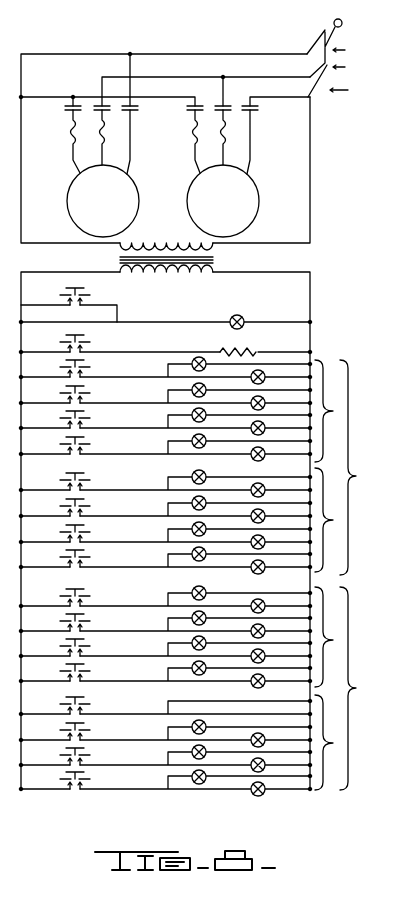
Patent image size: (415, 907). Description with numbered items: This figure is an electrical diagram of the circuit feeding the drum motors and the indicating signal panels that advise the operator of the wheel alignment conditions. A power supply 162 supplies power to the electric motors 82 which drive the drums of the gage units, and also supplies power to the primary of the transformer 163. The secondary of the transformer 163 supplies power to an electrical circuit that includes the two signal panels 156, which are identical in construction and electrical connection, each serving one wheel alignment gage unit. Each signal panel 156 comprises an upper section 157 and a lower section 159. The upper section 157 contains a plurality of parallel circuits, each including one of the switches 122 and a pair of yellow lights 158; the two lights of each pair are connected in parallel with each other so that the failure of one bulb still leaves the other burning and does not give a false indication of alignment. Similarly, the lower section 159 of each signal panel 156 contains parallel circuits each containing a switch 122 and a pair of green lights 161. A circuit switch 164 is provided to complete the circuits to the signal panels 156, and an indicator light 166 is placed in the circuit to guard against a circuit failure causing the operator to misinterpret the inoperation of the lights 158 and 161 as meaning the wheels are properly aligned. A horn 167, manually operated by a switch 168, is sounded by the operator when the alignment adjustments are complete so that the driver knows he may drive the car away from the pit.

The electric motors 82 is at (121, 194).
The power supply 162 is at (306, 56).
The transformer 163 is at (182, 274).
The circuit switch 164 is at (83, 298).
The indicator light 166 is at (244, 314).
The horn 167 is at (253, 349).
The switch 168 is at (85, 339).
The switches 122 is at (86, 375).
The yellow light bulbs 158 is at (197, 356).
The green light bulbs 161 is at (192, 475).
The upper section 157 is at (333, 523).
The lower section 159 is at (333, 629).
The signal panel 156 is at (360, 575).